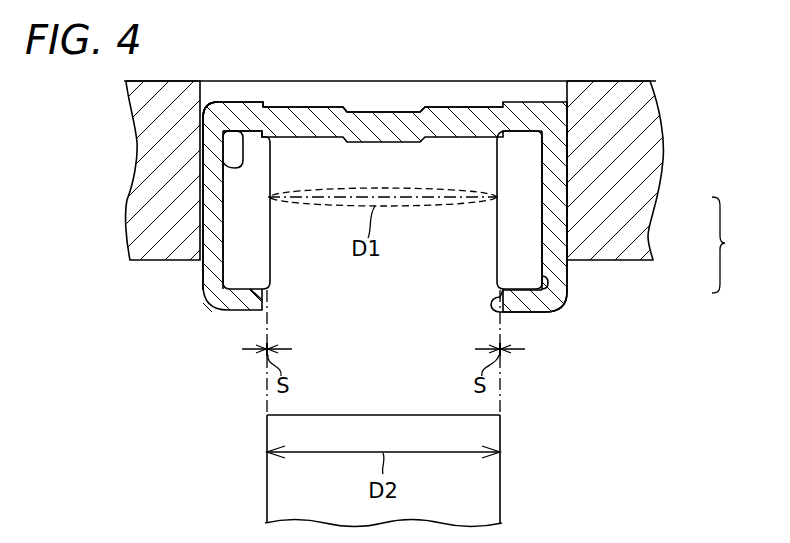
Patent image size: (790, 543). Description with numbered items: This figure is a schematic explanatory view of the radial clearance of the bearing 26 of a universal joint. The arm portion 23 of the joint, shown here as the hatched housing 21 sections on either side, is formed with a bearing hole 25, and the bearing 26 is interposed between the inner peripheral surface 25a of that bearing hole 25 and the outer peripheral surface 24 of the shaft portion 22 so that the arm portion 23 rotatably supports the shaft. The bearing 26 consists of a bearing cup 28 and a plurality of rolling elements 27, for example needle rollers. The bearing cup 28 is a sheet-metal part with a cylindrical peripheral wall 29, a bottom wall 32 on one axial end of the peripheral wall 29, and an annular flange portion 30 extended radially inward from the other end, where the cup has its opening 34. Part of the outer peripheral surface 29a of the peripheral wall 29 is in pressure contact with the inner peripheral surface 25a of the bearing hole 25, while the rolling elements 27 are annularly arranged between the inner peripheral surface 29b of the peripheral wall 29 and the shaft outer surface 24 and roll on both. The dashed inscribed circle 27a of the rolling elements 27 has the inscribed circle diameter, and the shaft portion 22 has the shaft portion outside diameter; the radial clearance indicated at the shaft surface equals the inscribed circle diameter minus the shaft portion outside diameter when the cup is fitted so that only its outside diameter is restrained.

The housing 21 is at (602, 81).
The shaft 22 is at (504, 507).
The arm portion 23 is at (657, 123).
The shaft portion 24 is at (502, 471).
The bearing hole 25 is at (567, 157).
The inner peripheral surface of the bearing hole 25a is at (201, 98).
The bearing 26 is at (733, 245).
The rolling elements 27 is at (546, 213).
The inscribed circle 27a is at (443, 208).
The bearing cup 28 is at (571, 282).
The peripheral wall 29 is at (205, 207).
The outer peripheral surface of the peripheral wall 29a is at (201, 150).
The inner peripheral surface of the peripheral wall 29b is at (243, 131).
The annular flange portion 30 is at (240, 302).
The bottom wall 32 is at (329, 113).
The opening 34 is at (501, 321).